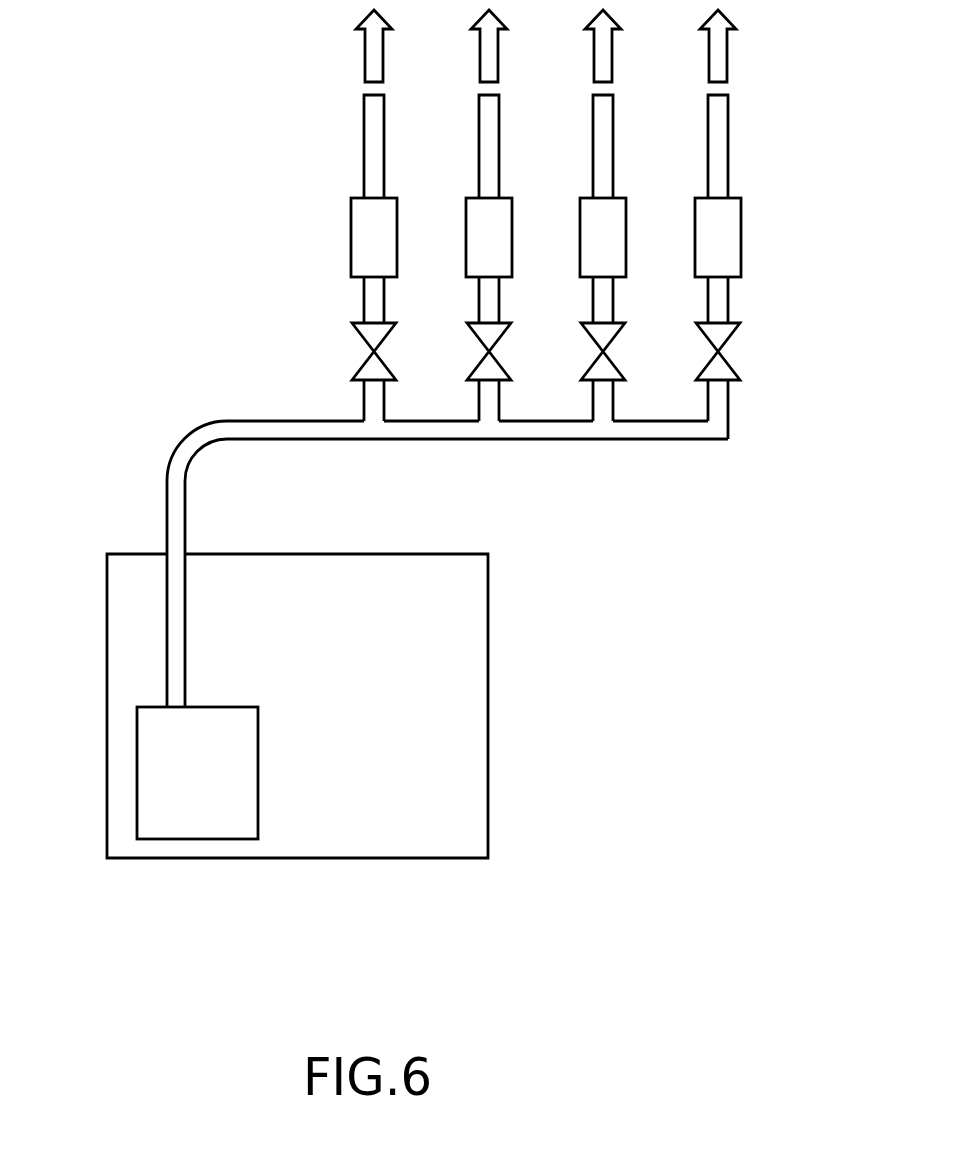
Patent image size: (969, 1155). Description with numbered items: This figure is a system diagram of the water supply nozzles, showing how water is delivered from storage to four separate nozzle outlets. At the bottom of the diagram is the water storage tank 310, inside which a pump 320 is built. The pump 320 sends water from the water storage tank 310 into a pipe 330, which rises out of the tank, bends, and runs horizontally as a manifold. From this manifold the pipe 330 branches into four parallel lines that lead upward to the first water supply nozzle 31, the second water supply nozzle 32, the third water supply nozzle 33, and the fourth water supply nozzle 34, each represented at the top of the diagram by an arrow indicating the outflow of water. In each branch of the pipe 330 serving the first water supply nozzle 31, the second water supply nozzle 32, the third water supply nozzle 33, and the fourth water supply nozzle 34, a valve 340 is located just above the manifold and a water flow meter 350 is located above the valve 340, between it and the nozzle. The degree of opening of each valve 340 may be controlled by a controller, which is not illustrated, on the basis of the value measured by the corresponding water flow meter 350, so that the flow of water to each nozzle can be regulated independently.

The first water supply nozzle 31 is at (372, 120).
The second water supply nozzle 32 is at (487, 120).
The third water supply nozzle 33 is at (601, 120).
The fourth water supply nozzle 34 is at (716, 120).
The water flow meter 350 is at (372, 212).
The valve 340 is at (372, 338).
The pipe 330 is at (176, 480).
The water storage tank 310 is at (490, 695).
The pump 320 is at (193, 818).